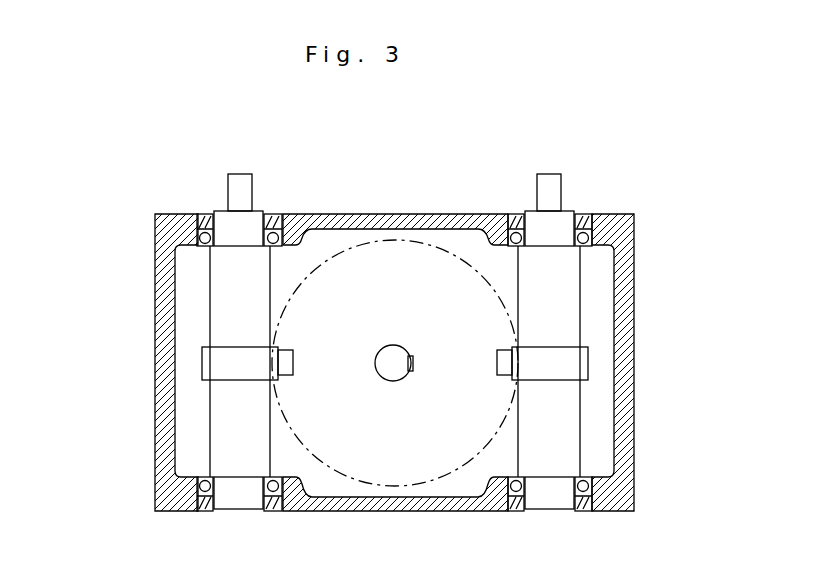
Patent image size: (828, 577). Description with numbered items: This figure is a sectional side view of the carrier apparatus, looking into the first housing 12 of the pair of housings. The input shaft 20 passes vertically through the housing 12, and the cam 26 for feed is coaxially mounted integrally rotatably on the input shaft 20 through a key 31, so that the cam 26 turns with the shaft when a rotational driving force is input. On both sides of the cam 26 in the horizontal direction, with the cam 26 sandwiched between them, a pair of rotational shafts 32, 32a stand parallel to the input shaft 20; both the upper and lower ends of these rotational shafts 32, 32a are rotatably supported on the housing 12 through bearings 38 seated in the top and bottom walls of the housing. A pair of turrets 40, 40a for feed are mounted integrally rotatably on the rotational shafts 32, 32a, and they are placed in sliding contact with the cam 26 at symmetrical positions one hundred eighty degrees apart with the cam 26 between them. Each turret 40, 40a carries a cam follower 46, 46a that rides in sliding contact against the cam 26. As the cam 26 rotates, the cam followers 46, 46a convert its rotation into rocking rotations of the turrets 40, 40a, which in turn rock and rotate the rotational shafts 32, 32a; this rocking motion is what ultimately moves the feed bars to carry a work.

The first housing 12 is at (467, 511).
The input shaft 20 is at (371, 484).
The cam for feed 26 is at (357, 248).
The key 31 is at (412, 362).
The rotational shaft 32 is at (568, 280).
The rotational shaft 32a is at (210, 306).
The bearing 38 is at (200, 226).
The turret for feed 40 is at (580, 363).
The turret for feed 40a is at (202, 368).
The cam follower 46 is at (475, 400).
The cam follower 46a is at (290, 352).